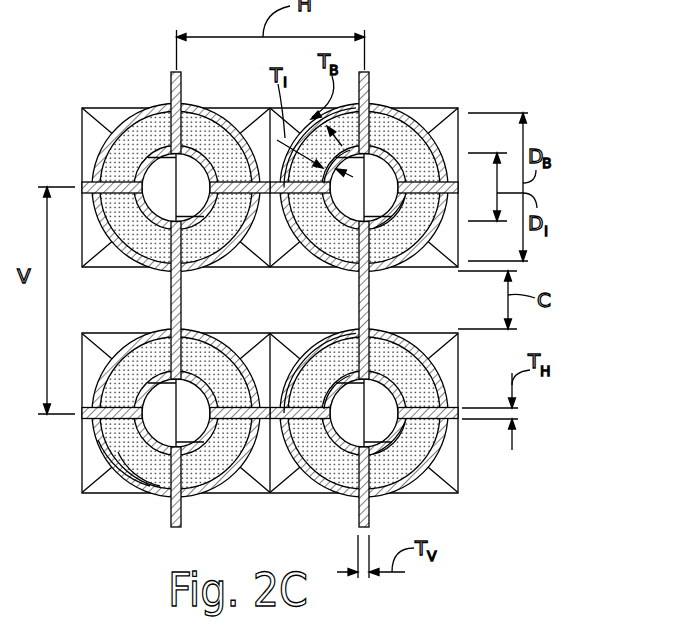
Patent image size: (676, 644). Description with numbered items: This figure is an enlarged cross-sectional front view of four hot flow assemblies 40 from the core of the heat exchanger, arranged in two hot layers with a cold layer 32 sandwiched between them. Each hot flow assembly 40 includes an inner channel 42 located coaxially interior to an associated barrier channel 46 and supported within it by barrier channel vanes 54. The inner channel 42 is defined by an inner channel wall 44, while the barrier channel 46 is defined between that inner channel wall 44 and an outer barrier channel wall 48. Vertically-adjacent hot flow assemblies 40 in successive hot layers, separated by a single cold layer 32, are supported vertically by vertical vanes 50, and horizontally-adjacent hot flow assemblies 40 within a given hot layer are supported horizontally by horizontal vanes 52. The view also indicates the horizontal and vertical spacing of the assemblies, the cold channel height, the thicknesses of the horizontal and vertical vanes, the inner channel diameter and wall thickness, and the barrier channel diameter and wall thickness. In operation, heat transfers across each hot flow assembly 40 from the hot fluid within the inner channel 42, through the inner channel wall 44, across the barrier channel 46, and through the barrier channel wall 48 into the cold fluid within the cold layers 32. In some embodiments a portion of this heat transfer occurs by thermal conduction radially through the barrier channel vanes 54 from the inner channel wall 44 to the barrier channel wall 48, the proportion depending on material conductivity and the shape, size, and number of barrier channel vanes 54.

The cold layer 32 is at (281, 313).
The hot flow assembly 40 is at (448, 86).
The inner channel 42 is at (162, 182).
The inner channel wall 44 is at (147, 157).
The barrier channel 46 is at (108, 137).
The barrier channel wall 48 is at (123, 153).
The vertical vane 50 is at (170, 293).
The horizontal vane 52 is at (251, 422).
The barrier channel vane 54 is at (150, 456).